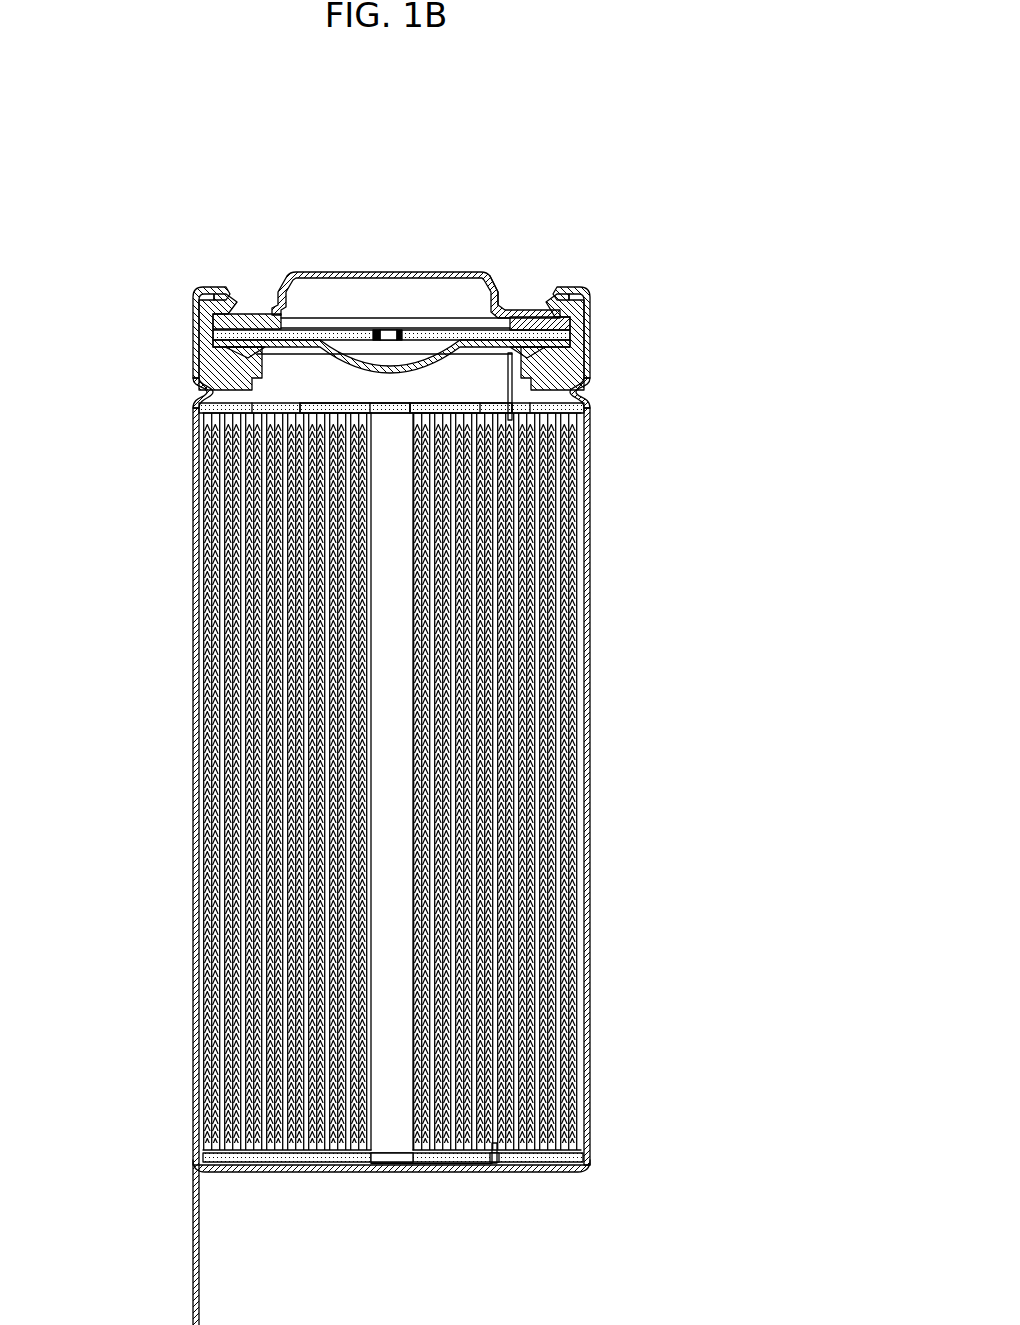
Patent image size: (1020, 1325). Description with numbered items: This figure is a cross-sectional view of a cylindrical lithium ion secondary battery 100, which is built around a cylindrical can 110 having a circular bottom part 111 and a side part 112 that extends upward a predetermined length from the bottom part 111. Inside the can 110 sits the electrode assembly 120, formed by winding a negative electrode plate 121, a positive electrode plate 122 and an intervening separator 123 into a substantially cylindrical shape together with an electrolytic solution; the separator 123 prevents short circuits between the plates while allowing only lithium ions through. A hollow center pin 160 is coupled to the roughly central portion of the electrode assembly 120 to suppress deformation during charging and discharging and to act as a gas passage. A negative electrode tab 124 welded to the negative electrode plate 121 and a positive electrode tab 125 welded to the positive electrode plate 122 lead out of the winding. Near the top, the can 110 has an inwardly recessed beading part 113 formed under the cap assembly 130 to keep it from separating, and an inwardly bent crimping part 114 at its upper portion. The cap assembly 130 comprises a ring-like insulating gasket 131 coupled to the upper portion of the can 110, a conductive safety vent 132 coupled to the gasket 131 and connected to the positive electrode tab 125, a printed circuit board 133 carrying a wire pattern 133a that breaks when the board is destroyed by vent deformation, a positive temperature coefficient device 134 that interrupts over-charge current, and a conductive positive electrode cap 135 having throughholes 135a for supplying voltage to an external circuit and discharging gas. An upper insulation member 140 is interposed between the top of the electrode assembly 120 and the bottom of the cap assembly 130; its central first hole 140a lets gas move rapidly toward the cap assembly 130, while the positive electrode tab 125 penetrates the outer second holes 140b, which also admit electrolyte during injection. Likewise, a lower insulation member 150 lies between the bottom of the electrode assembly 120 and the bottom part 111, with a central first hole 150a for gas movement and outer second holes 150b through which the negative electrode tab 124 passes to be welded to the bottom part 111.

The cylindrical lithium ion secondary battery 100 is at (158, 175).
The cylindrical can 110 is at (598, 999).
The bottom part 111 is at (548, 1173).
The side part 112 is at (591, 1106).
The beading part 113 is at (196, 390).
The crimping part 114 is at (222, 288).
The electrode assembly 120 is at (597, 747).
The negative electrode plate 121 is at (592, 488).
The positive electrode plate 122 is at (560, 561).
The separator 123 is at (563, 524).
The negative electrode tab 124 is at (450, 1168).
The positive electrode tab 125 is at (530, 373).
The cap assembly 130 is at (353, 263).
The insulating gasket 131 is at (566, 300).
The safety vent 132 is at (213, 346).
The printed circuit board 133 is at (213, 332).
The wire pattern 133a is at (400, 330).
The positive temperature coefficient device 134 is at (523, 318).
The positive electrode cap 135 is at (258, 312).
The throughholes 135a is at (497, 282).
The upper insulation member 140 is at (585, 408).
The first hole 140a is at (387, 410).
The second holes 140b is at (487, 408).
The lower insulation member 150 is at (582, 1156).
The first hole 150a is at (390, 1164).
The second holes 150b is at (497, 1166).
The center pin 160 is at (433, 855).